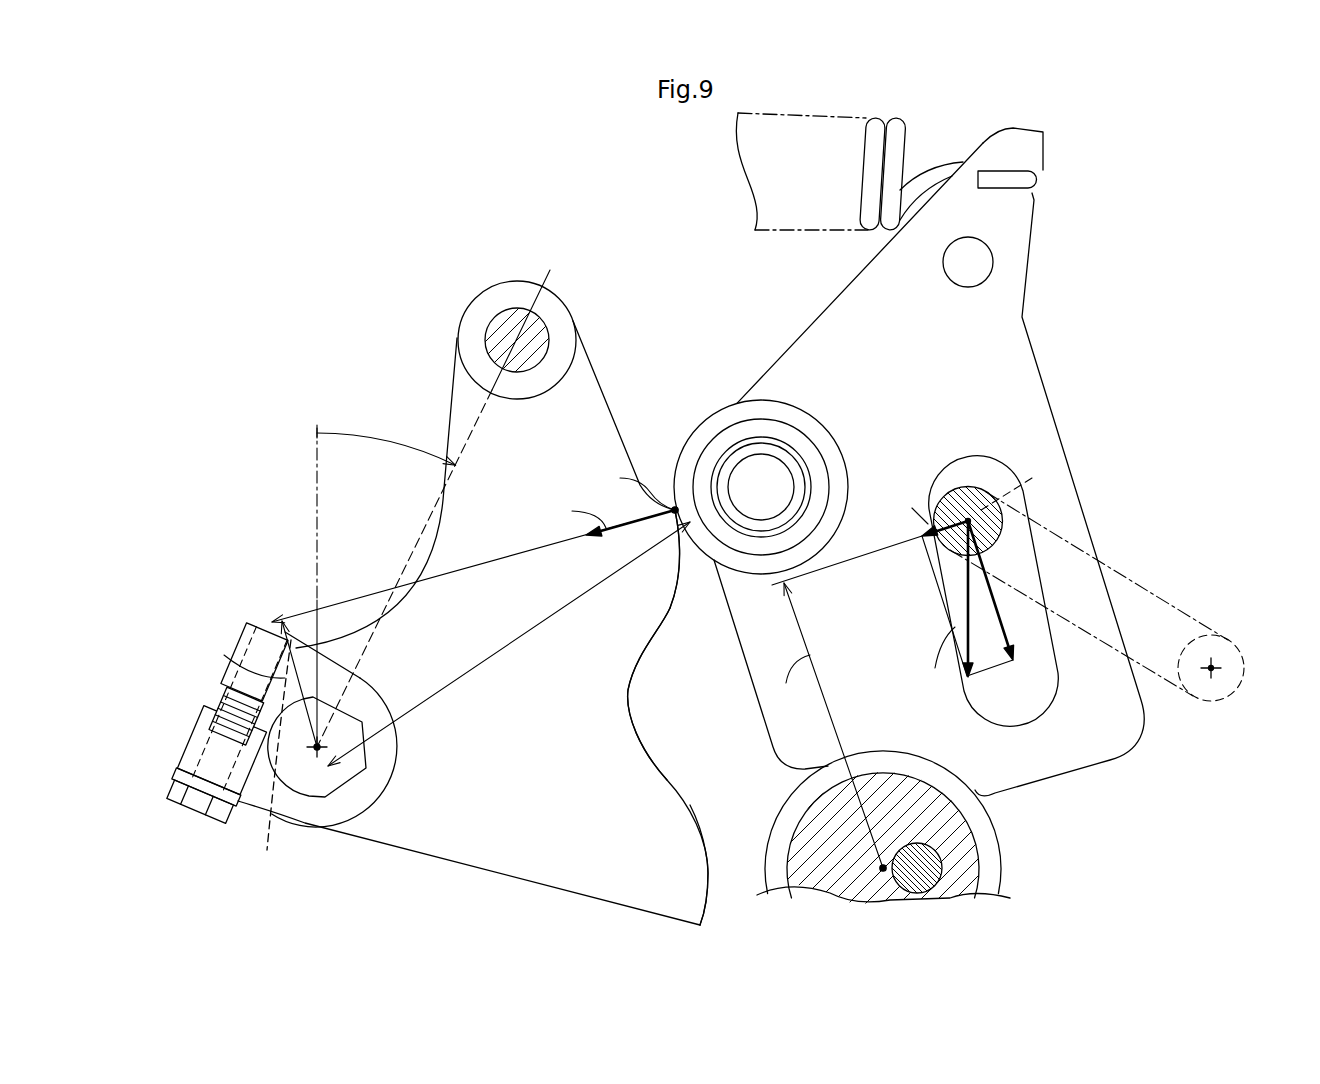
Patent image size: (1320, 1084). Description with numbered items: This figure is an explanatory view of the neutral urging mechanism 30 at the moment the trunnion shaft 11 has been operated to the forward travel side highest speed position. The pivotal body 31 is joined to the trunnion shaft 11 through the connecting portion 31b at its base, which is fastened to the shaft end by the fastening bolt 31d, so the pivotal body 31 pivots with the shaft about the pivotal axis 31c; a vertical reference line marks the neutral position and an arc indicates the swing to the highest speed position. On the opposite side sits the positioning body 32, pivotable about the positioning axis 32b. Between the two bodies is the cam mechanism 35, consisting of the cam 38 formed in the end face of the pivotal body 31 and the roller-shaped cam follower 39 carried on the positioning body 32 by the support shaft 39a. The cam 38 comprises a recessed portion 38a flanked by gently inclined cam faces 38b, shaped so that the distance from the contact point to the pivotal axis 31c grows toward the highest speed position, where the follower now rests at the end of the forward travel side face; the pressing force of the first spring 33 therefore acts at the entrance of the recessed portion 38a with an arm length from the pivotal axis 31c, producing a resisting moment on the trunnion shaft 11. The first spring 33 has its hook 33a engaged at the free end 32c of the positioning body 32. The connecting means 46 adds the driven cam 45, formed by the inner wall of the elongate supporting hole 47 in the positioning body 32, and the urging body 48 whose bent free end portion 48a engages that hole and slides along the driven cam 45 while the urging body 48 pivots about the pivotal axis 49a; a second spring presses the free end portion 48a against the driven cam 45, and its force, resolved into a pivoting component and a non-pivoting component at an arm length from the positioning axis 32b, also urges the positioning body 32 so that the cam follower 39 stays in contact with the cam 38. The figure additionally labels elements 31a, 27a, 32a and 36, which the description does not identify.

The neutral urging mechanism 30 is at (1128, 172).
The pivotal body 31 is at (450, 865).
The lever arm boss (cable attachment ring) 31a is at (496, 286).
The connecting portion 31b is at (372, 684).
The pivotal axis 31c is at (272, 838).
The fastening bolt 31d is at (193, 806).
The trunnion shaft 11 is at (352, 768).
The cable end pin 27a is at (485, 343).
The positioning body 32 is at (1035, 352).
The cam plate pivot shaft 32a is at (895, 780).
The positioning axis 32b is at (880, 867).
The free end 32c is at (1043, 152).
The first spring 33 is at (877, 230).
The hook 33a is at (1031, 181).
The cam mechanism 35 is at (658, 462).
The pivot bushing 36 is at (978, 866).
The cam 38 is at (612, 717).
The recessed portion 38a is at (628, 704).
The inclined cam faces 38b is at (686, 562).
The cam follower 39 is at (812, 418).
The support shaft 39a is at (789, 479).
The driven cam 45 is at (958, 582).
The connecting means 46 is at (1130, 537).
The supporting hole 47 is at (1040, 698).
The urging body 48 is at (1153, 593).
The free end portion 48a is at (968, 487).
The pivotal axis 49a is at (1216, 671).